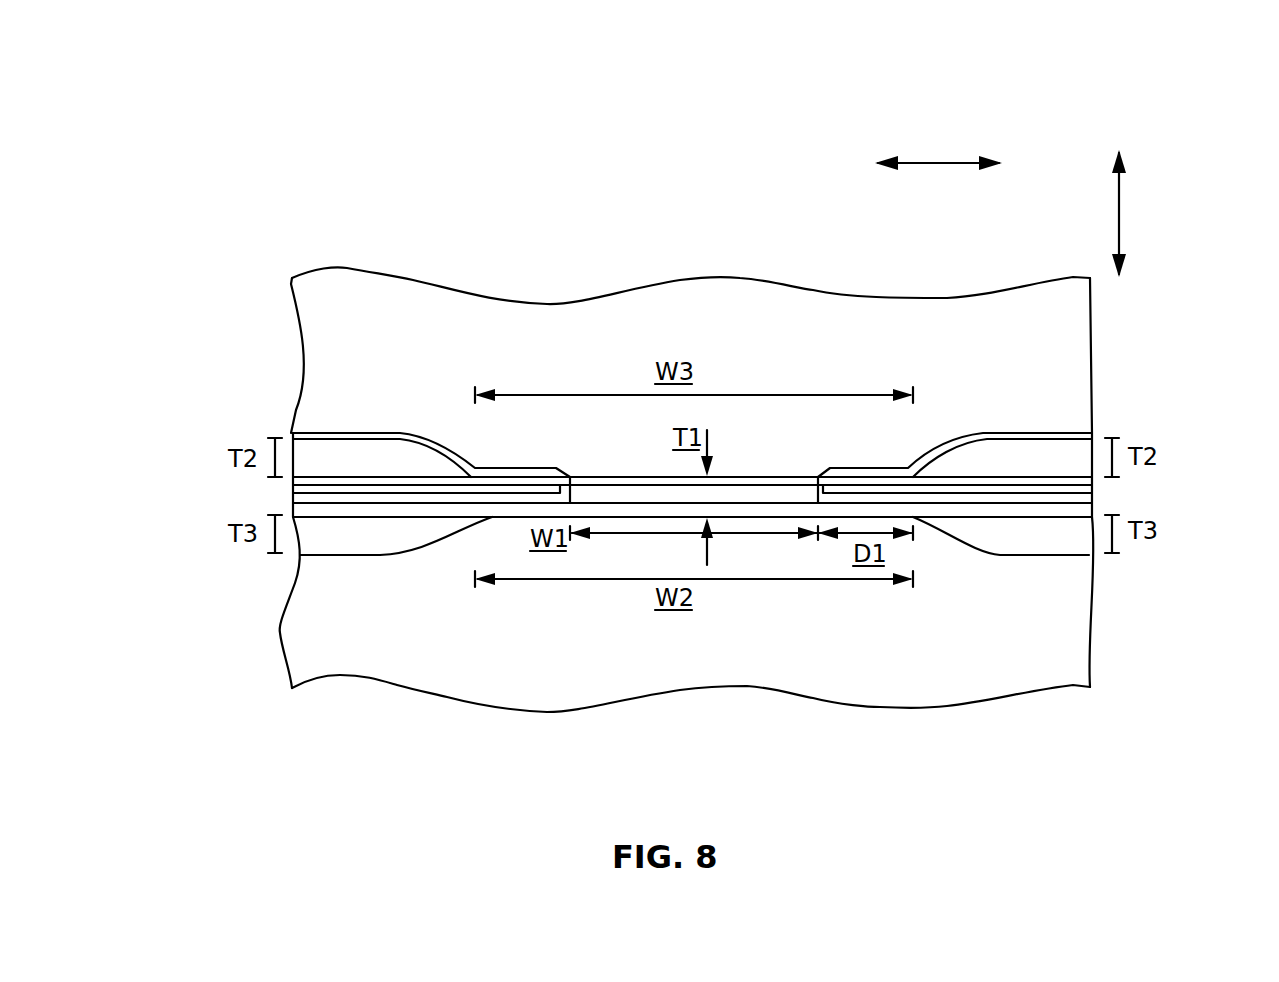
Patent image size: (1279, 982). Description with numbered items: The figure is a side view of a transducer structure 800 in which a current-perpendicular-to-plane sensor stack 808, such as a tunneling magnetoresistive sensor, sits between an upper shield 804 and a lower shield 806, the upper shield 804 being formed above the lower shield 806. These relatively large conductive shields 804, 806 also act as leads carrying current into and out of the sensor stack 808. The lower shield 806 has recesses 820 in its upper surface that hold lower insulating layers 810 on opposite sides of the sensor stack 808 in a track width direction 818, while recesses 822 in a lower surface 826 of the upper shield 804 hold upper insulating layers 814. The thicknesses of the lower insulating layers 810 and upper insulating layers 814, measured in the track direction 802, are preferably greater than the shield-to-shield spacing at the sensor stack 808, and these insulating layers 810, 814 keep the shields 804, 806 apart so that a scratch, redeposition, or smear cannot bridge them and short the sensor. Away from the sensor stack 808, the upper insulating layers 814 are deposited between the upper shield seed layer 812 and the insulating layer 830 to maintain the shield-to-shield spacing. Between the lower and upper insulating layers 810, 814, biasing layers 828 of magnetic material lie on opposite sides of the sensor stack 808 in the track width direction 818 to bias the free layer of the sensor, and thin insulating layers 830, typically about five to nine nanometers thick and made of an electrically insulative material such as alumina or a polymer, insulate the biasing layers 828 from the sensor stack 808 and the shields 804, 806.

The transducer structure 800 is at (222, 117).
The track direction 802 is at (1118, 207).
The upper shield 804 is at (825, 290).
The lower shield 806 is at (400, 690).
The current-perpendicular-to-plane sensor stack 808 is at (628, 534).
The lower insulating layer 810 is at (383, 557).
The upper shield seed layer 812 is at (340, 432).
The upper insulating layer 814 is at (436, 445).
The track width direction 818 is at (940, 162).
The recess 820 is at (319, 534).
The recess 822 is at (324, 442).
The lower surface 826 is at (403, 452).
The biasing layer 828 is at (505, 495).
The insulating layer 830 is at (293, 497).